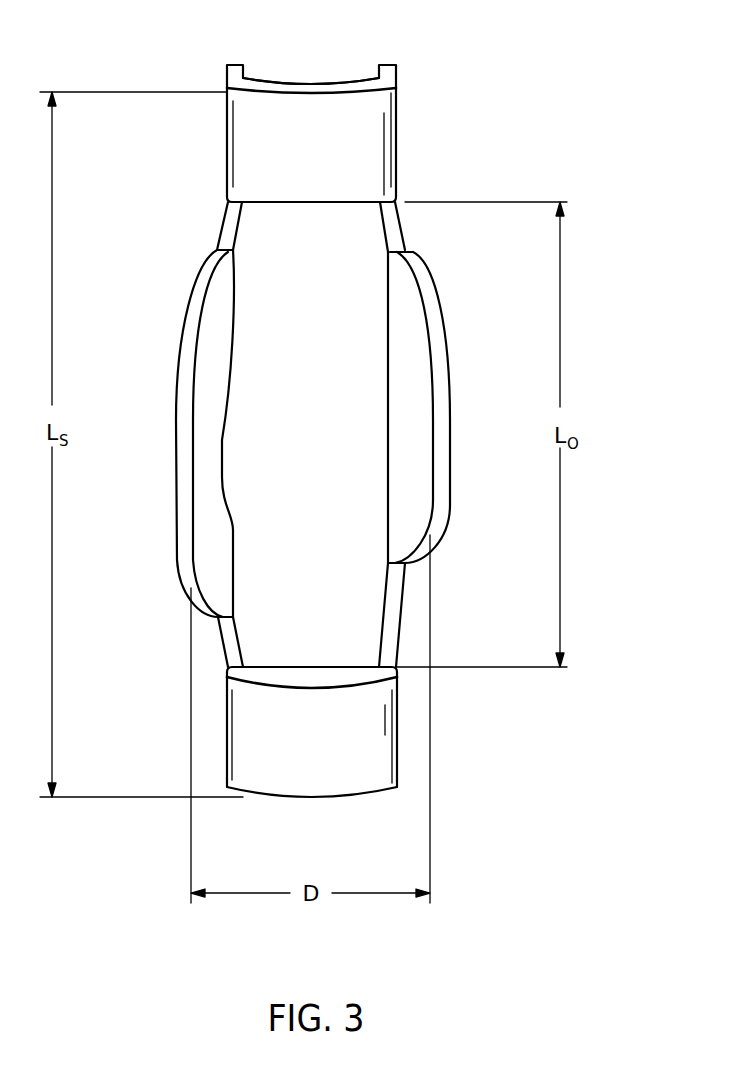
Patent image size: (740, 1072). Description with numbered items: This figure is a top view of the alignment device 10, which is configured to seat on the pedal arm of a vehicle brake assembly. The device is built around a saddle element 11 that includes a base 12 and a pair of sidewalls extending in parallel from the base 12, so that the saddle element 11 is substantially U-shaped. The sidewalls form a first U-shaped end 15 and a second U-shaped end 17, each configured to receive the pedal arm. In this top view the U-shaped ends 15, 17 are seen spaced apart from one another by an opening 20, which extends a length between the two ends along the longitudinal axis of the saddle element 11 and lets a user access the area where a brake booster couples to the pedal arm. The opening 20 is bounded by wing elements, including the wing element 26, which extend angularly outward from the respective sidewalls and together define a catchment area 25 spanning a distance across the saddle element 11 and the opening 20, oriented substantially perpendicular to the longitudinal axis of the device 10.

The alignment device 10 is at (560, 141).
The saddle element 11 is at (396, 130).
The base 12 is at (323, 92).
The first U-shaped end 15 is at (253, 155).
The second U-shaped end 17 is at (343, 773).
The opening 20 is at (280, 636).
The catchment area 25 is at (262, 457).
The second wing element 26 is at (176, 340).